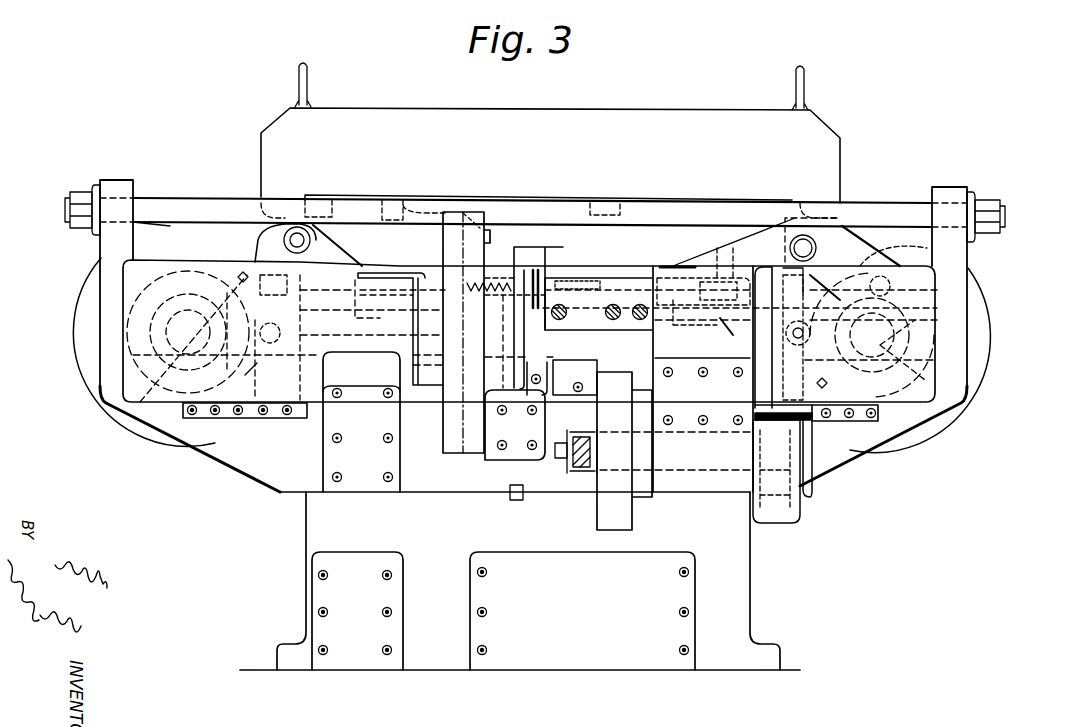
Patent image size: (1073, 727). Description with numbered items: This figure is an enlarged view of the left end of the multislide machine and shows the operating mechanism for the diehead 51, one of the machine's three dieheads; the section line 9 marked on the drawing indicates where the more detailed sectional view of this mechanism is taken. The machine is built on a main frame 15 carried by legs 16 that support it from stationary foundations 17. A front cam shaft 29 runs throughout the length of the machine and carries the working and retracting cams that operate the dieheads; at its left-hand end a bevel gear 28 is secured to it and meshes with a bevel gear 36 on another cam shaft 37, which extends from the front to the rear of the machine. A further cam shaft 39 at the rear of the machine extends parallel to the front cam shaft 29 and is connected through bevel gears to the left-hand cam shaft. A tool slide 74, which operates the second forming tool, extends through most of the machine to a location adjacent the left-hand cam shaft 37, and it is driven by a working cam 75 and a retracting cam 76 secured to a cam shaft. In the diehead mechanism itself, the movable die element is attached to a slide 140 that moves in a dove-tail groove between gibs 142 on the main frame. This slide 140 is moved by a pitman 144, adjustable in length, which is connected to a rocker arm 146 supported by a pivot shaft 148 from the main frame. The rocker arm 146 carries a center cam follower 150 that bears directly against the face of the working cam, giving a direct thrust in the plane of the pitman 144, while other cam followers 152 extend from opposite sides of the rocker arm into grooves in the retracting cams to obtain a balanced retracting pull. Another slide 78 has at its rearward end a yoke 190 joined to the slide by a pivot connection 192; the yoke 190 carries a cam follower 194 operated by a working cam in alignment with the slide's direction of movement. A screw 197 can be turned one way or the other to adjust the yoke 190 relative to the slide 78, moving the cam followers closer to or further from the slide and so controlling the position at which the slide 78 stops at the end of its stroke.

The diehead 51 is at (641, 116).
The main frame 15 is at (292, 512).
The legs 16 is at (306, 597).
The stationary foundations 17 is at (790, 670).
The bevel gear 28 is at (114, 422).
The cam shaft 29 is at (940, 348).
The bevel gear 36 is at (197, 457).
The cam shaft 37 is at (683, 357).
The cam shaft 39 is at (102, 402).
The slide 74 is at (500, 290).
The working cam 75 is at (515, 385).
The retracting cam 76 is at (470, 404).
The slide 78 is at (375, 267).
The slide 140 is at (603, 270).
The gibs 142 is at (717, 250).
The pitman 144 is at (777, 265).
The rocker arm 146 is at (968, 253).
The pivot shaft 148 is at (820, 240).
The center cam follower 150 is at (742, 347).
The cam followers 152 is at (965, 290).
The yoke 190 is at (257, 247).
The pivot connection 192 is at (319, 240).
The cam follower 194 is at (266, 372).
The screw 197 is at (247, 263).
The section line 9- 9 is at (680, 262).